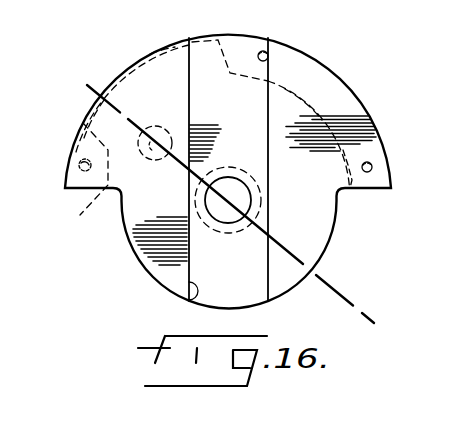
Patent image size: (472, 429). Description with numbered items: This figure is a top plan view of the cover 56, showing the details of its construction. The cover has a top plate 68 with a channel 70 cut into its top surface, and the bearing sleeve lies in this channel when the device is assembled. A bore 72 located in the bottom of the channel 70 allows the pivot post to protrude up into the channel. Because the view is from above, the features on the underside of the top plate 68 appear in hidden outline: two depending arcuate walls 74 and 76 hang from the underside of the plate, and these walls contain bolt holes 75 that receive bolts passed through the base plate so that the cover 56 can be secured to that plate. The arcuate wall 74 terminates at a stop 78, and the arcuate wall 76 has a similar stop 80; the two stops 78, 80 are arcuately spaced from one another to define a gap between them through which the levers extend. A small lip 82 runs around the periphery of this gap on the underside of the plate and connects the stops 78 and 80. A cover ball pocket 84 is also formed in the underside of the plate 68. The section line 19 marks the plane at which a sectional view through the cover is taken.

The section line 19- 19 is at (86, 48).
The cover 56 is at (400, 134).
The top plate 68 is at (152, 275).
The channel 70 is at (186, 300).
The bore 72 is at (226, 177).
The arcuate wall 74 is at (92, 183).
The bolt holes 75 is at (281, 38).
The arcuate wall 76 is at (339, 95).
The stop 78 is at (88, 118).
The stop 80 is at (230, 73).
The lip 82 is at (165, 28).
The cover ball pocket 84 is at (157, 162).